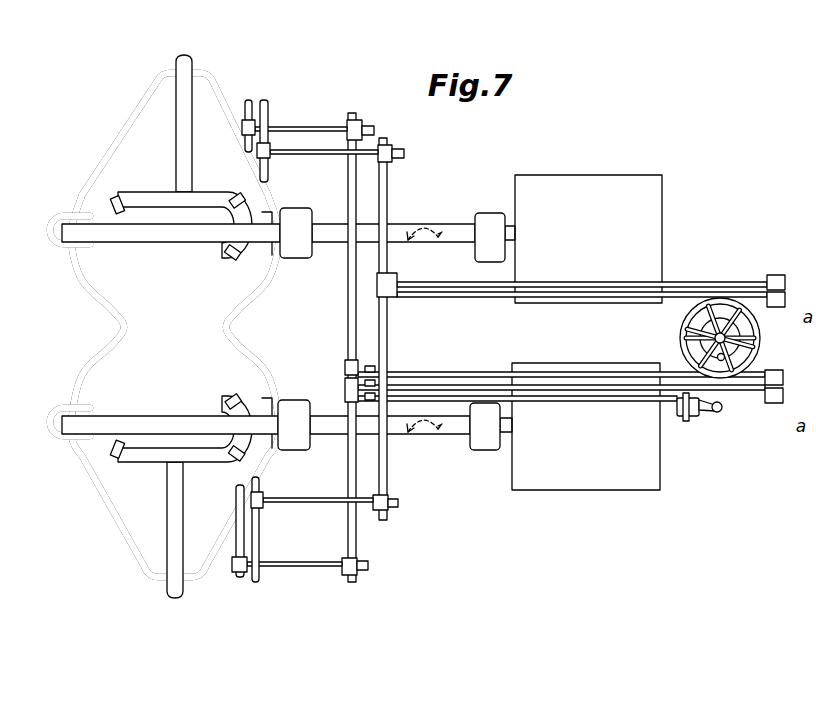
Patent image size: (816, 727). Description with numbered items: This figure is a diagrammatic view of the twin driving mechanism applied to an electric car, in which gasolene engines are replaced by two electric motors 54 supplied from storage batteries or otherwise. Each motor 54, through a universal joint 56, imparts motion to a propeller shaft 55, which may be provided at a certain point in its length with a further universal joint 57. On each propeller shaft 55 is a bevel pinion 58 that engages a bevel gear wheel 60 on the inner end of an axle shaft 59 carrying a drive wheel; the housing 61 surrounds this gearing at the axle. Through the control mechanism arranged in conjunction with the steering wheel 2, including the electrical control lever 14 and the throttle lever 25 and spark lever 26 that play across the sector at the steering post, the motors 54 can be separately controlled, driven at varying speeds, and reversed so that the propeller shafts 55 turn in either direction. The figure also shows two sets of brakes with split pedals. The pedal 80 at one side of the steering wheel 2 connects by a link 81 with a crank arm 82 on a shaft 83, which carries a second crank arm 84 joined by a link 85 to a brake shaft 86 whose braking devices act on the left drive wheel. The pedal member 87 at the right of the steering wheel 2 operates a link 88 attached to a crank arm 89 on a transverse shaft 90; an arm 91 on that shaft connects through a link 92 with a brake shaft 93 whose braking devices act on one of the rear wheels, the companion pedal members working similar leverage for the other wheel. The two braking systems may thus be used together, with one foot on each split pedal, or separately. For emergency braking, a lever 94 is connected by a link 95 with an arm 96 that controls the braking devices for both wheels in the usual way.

The steering wheel 2 is at (688, 333).
The electrical control lever 14 is at (722, 334).
The throttle lever 25 is at (710, 353).
The spark lever 26 is at (745, 340).
The electric motors 54 is at (581, 175).
The propeller shafts 55 is at (394, 226).
The universal joints 56 is at (486, 213).
The universal joints 57 is at (297, 258).
The bevel pinions 58 is at (226, 246).
The axle shafts 59 is at (176, 150).
The bevel gear wheels 60 is at (200, 195).
The tank body 61 is at (197, 580).
The pedal 80 is at (773, 275).
The link 81 is at (449, 283).
The crank arm 82 is at (396, 276).
The shaft 83 is at (389, 192).
The crank arm 84 is at (405, 151).
The link 85 is at (326, 153).
The brake shaft 86 is at (268, 105).
The pedal member 87 is at (776, 370).
The link 88 is at (683, 372).
The crank arm 89 is at (345, 366).
The transverse shaft 90 is at (348, 283).
The arm 91 is at (367, 124).
The link 92 is at (312, 126).
The brake shaft 93 is at (246, 103).
The lever 94 is at (712, 412).
The link 95 is at (643, 403).
The arm 96 is at (345, 394).